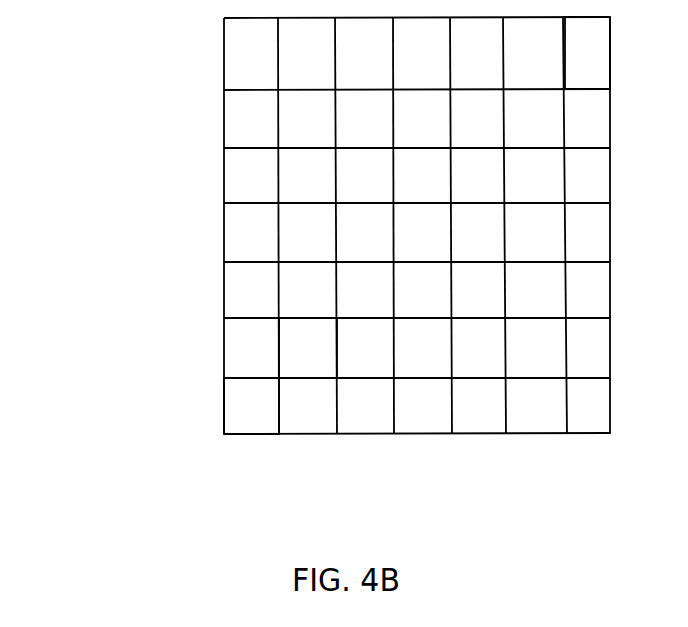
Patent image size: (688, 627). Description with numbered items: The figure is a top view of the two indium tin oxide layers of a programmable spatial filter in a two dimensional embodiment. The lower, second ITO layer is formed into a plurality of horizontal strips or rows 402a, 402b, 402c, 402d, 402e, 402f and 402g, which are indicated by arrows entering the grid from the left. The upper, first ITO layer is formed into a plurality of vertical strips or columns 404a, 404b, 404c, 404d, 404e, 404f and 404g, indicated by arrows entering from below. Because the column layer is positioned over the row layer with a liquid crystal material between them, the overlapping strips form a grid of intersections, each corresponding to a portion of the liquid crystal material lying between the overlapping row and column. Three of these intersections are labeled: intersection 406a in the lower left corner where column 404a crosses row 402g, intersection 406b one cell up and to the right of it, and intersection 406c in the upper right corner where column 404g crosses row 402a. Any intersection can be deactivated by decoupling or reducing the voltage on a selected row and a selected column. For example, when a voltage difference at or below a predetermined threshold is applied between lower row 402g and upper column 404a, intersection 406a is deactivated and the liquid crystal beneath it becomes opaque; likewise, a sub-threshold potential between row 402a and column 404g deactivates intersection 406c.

The row of second ITO layer 402a is at (213, 53).
The row of second ITO layer 402b is at (213, 120).
The row of second ITO layer 402c is at (213, 180).
The row of second ITO layer 402d is at (213, 235).
The row of second ITO layer 402e is at (213, 294).
The row of second ITO layer 402f is at (213, 350).
The lower layer row 402g is at (213, 410).
The upper column 404a is at (258, 448).
The column of first ITO layer 404b is at (312, 448).
The column of first ITO layer 404c is at (367, 448).
The column of first ITO layer 404d is at (422, 448).
The column of first ITO layer 404e is at (480, 448).
The column of first ITO layer 404f is at (535, 448).
The column of first ITO layer 404g is at (589, 448).
The intersection 406a is at (251, 406).
The intersection 406b is at (308, 348).
The intersection 406c is at (587, 53).